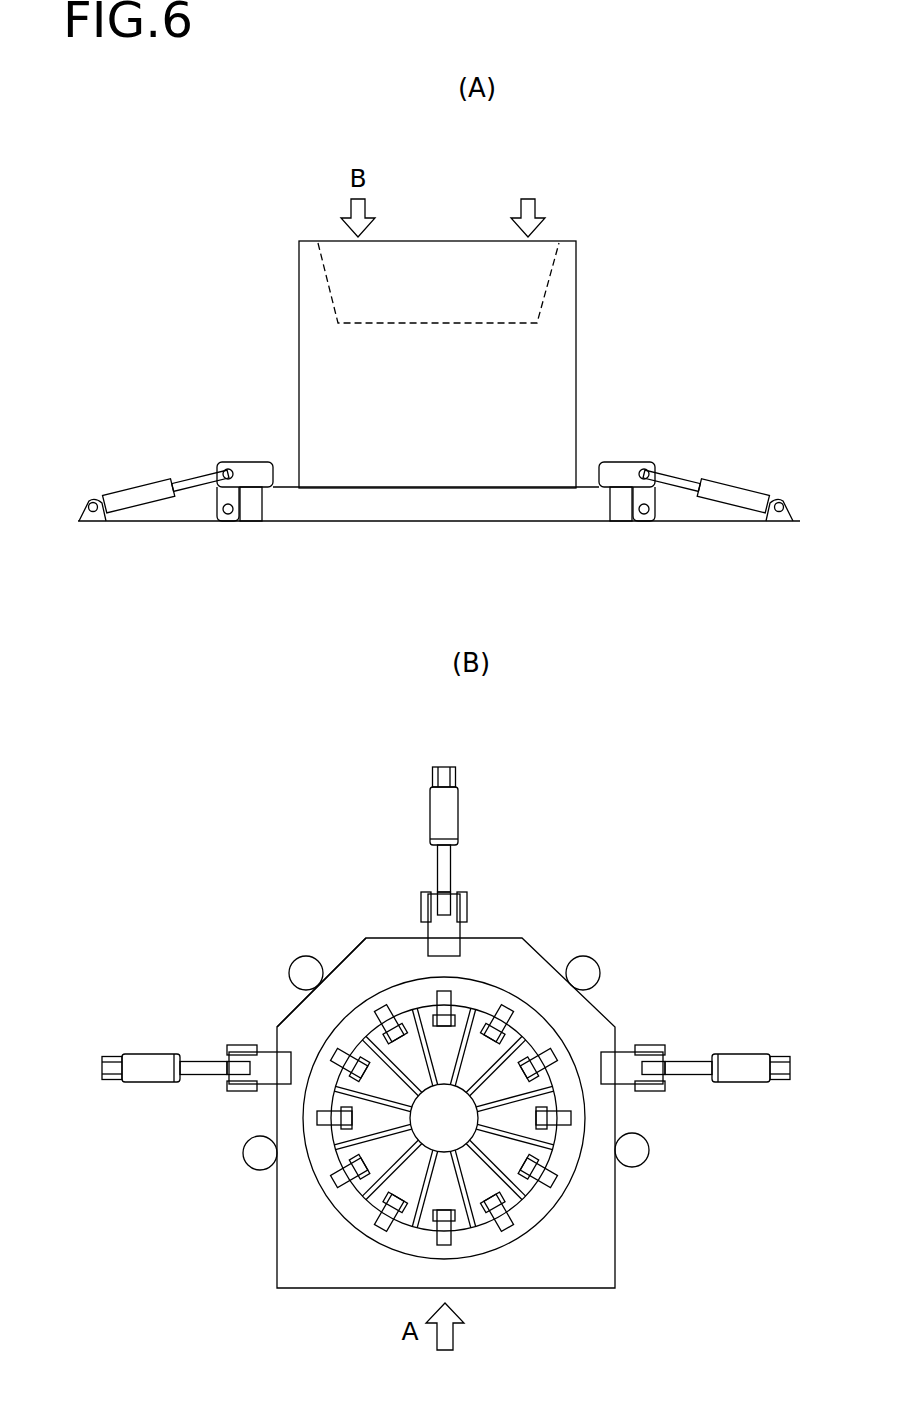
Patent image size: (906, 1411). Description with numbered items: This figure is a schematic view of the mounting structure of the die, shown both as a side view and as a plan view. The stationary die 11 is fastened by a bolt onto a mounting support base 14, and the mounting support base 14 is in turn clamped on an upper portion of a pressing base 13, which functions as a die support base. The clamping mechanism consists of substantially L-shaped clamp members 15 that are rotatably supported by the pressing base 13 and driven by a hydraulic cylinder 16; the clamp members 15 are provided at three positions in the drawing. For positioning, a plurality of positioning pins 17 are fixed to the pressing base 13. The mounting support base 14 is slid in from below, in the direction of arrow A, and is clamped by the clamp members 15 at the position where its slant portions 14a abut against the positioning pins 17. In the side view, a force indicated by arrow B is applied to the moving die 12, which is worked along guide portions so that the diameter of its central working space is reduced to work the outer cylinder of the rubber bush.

The stationary die 11 is at (570, 314).
The moving die 12 is at (478, 256).
The pressing base 13 is at (678, 518).
The mounting support base 14 is at (517, 512).
The slant portions 14a is at (293, 1001).
The clamp members 15 is at (247, 462).
The hydraulic cylinder 16 is at (131, 490).
The positioning pins 17 is at (304, 963).